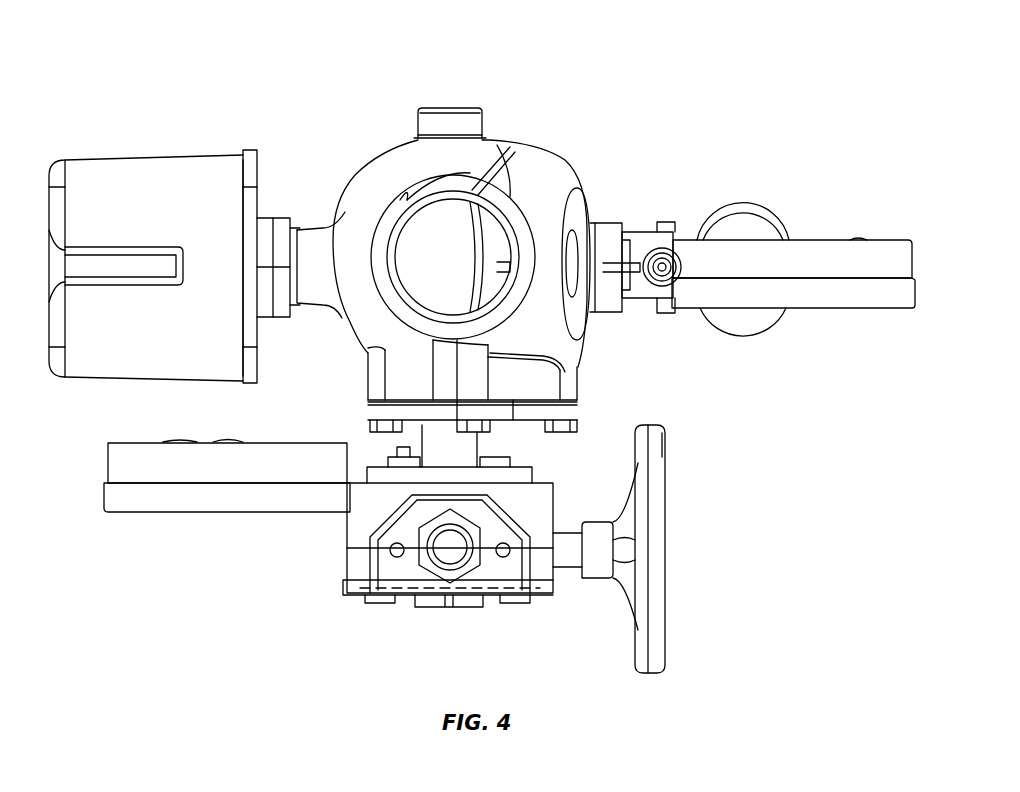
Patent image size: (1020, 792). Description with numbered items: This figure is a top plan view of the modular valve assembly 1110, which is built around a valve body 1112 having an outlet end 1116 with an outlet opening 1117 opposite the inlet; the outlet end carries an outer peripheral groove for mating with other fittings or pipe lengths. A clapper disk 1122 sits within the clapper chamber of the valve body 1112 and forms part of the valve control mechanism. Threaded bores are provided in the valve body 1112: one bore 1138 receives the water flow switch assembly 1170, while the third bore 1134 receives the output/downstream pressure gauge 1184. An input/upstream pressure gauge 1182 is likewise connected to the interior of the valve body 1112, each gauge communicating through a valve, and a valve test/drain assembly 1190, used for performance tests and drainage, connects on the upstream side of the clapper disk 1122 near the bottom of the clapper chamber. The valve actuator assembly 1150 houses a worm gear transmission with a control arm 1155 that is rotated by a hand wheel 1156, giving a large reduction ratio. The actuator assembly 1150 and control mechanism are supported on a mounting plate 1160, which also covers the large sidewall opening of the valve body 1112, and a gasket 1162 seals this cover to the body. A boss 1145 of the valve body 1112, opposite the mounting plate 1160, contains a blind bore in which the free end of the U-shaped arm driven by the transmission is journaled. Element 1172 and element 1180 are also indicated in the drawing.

The valve assembly 1110 is at (360, 40).
The valve body 1112 is at (570, 152).
The outlet end 1116 is at (383, 247).
The outlet opening 1117 is at (417, 247).
The clapper disk 1122 is at (490, 240).
The third bore 1134 is at (583, 253).
The bore 1138 is at (312, 248).
The boss 1145 is at (457, 107).
The valve actuator assembly 1150 is at (336, 563).
The control arm 1155 is at (567, 560).
The hand wheel 1156 is at (662, 495).
The mounting plate 1160 is at (370, 412).
The gasket 1162 is at (370, 402).
The water flow switch assembly 1170 is at (179, 150).
The drum slot 1172 is at (137, 158).
The gear 1180 is at (638, 290).
The input/upstream pressure gauge 1182 is at (190, 513).
The output/downstream pressure gauge 1184 is at (832, 308).
The valve test/drain assembly 1190 is at (746, 318).